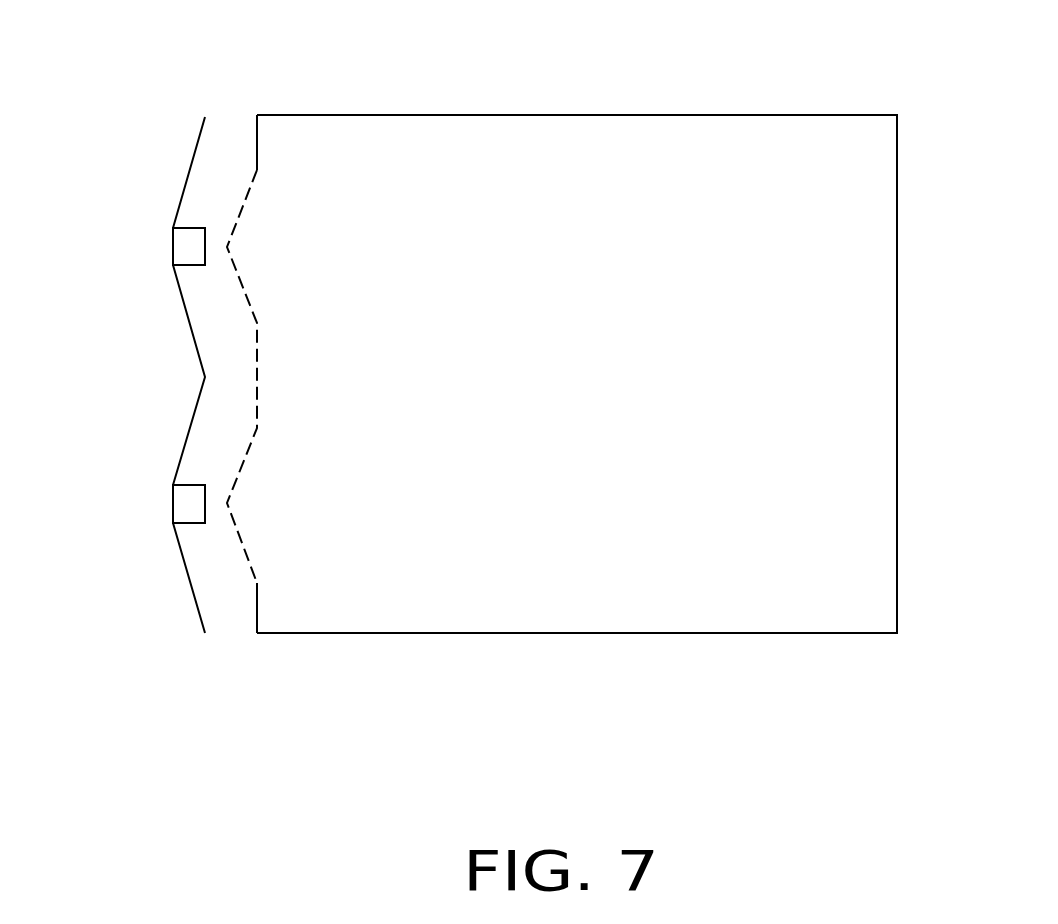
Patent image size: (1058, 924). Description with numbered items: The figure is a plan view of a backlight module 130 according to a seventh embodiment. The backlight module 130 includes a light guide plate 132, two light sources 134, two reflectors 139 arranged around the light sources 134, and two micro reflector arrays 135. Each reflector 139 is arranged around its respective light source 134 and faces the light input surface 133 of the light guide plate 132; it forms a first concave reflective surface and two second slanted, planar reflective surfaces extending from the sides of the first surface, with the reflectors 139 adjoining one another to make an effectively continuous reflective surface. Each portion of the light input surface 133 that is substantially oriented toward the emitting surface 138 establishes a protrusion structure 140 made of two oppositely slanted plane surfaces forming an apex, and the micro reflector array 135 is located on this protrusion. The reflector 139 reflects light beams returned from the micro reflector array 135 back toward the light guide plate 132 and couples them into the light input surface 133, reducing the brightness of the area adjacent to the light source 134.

The backlight module 130 is at (442, 72).
The light guide plate 132 is at (677, 103).
The light input surface 133 is at (255, 128).
The light source 134 is at (187, 250).
The micro reflector array 135 is at (247, 565).
The emitting surface 138 is at (211, 259).
The reflector 139 is at (183, 186).
The protrusion structure 140 is at (230, 247).